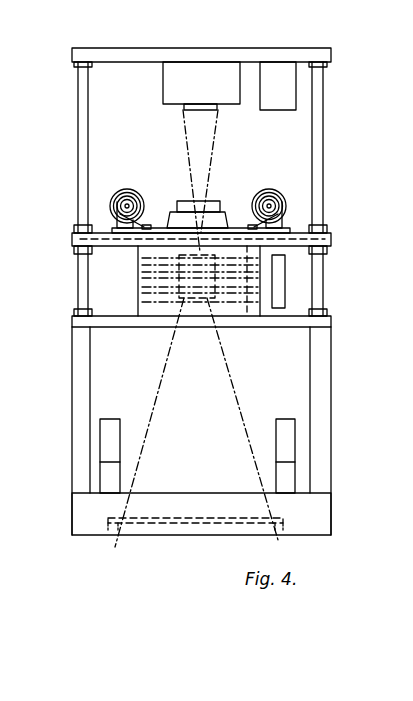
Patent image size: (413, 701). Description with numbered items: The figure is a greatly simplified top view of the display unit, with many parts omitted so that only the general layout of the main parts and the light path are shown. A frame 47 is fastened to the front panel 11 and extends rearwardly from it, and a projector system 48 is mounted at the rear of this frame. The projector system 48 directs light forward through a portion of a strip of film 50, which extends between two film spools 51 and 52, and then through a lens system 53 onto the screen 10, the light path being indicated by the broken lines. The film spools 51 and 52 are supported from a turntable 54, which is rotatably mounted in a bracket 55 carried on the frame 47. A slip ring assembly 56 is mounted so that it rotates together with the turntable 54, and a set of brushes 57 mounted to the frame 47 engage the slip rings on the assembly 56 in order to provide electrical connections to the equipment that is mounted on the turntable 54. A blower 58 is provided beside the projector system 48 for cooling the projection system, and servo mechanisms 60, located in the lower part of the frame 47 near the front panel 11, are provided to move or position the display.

The screen 10 is at (167, 518).
The front panel 11 is at (330, 516).
The frame 47 is at (332, 372).
The projector system 48 is at (207, 72).
The strip of film 50 is at (235, 228).
The film spool 51 is at (136, 192).
The film spool 52 is at (270, 192).
The lens system 53 is at (138, 271).
The turntable 54 is at (110, 230).
The bracket 55 is at (318, 240).
The slip ring assembly 56 is at (138, 294).
The set of brushes 57 is at (275, 262).
The blower 58 is at (280, 68).
The servo mechanisms 60 is at (118, 433).